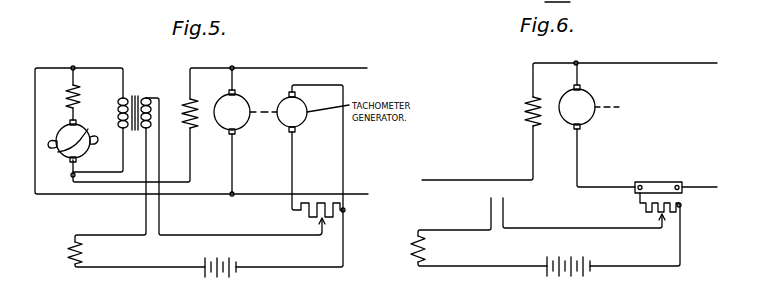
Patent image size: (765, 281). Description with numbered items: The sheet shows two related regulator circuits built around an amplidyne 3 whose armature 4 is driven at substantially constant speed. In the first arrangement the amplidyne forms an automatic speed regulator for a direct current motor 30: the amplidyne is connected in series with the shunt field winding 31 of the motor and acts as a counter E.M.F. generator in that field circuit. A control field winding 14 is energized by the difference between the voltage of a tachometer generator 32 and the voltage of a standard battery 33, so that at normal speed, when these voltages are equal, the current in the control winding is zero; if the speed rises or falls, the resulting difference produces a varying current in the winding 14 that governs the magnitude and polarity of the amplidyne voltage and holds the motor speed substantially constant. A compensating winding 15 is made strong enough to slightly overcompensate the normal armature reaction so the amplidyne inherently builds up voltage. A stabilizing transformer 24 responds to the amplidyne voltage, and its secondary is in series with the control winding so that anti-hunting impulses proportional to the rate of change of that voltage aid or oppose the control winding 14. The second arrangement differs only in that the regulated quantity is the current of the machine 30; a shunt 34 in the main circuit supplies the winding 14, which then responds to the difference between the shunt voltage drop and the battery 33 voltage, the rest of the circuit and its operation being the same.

In FIG. 5, the amplidyne generator 3 is at (66, 137).
In FIG. 5, the armature 4 is at (80, 128).
In FIG. 5, the control field winding 14 is at (70, 245).
In FIG. 6, the control field winding 14 is at (412, 242).
In FIG. 5, the compensating winding 15 is at (75, 92).
In FIG. 5, the stabilizing transformer 24 is at (134, 97).
In FIG. 5, the direct current motor 30 is at (241, 127).
In FIG. 6, the direct current motor 30 is at (588, 121).
In FIG. 5, the shunt field winding 31 is at (190, 99).
In FIG. 6, the shunt field winding 31 is at (527, 100).
In FIG. 5, the tachometer generator 32 is at (279, 101).
In FIG. 5, the standard battery 33 is at (221, 253).
In FIG. 6, the standard battery 33 is at (564, 259).
In FIG. 6, the shunt 34 is at (658, 181).